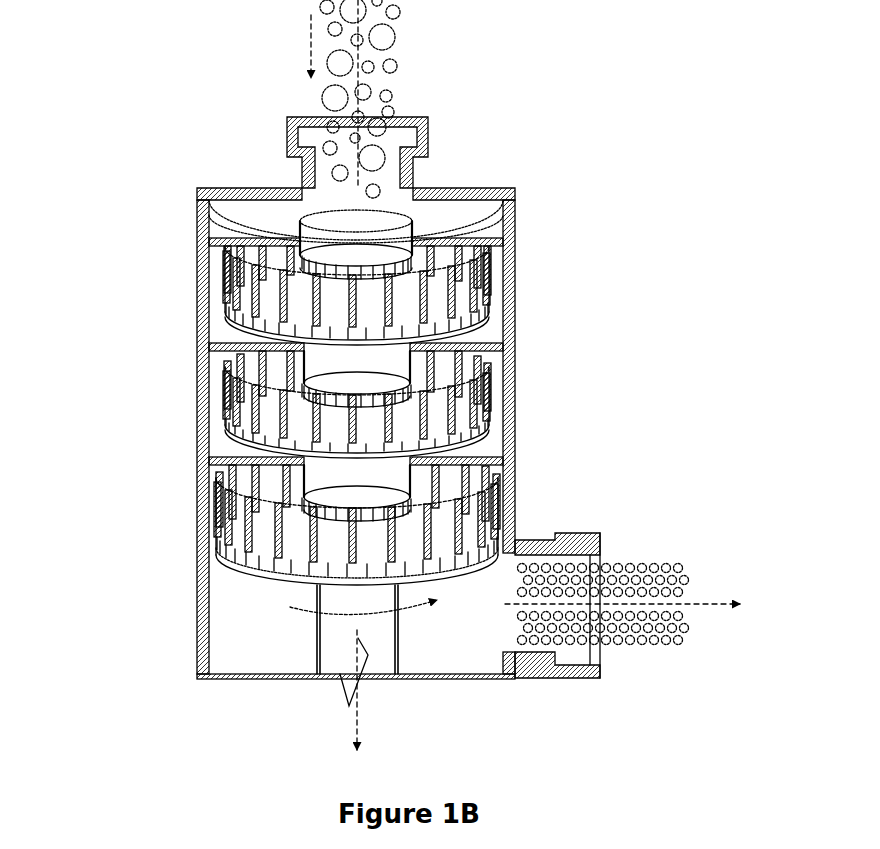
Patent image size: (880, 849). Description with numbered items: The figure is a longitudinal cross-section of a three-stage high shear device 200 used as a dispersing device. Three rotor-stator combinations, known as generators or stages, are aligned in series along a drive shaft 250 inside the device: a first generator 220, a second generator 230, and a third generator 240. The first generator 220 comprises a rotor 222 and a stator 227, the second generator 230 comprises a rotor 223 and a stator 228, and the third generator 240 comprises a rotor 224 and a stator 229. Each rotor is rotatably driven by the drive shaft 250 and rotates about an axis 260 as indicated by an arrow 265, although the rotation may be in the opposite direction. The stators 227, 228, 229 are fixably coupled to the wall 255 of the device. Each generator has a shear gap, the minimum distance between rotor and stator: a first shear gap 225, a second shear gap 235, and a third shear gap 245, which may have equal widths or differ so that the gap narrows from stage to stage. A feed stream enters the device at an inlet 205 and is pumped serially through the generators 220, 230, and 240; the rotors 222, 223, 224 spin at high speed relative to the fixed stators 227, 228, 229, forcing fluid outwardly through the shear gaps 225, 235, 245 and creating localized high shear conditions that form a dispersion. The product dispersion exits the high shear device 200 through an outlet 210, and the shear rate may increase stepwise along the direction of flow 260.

The high shear device 200 is at (146, 80).
The inlet 205 is at (396, 103).
The outlet 210 is at (693, 612).
The first generator 220 is at (353, 271).
The rotor 222 is at (493, 272).
The rotor 223 is at (493, 383).
The rotor 224 is at (500, 497).
The first shear gap 225 is at (420, 260).
The stator 227 is at (482, 225).
The stator 228 is at (482, 335).
The stator 229 is at (483, 446).
The second generator 230 is at (353, 400).
The second shear gap 235 is at (422, 370).
The third generator 240 is at (353, 520).
The third shear gap 245 is at (422, 483).
The drive shaft 250 is at (325, 656).
The wall 255 is at (196, 193).
The axis of rotation 260 is at (352, 722).
The arrow 265 is at (414, 626).